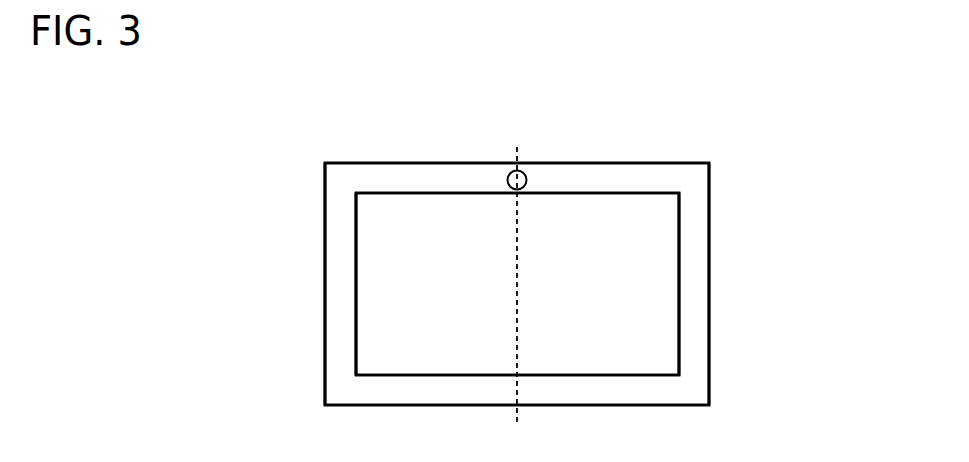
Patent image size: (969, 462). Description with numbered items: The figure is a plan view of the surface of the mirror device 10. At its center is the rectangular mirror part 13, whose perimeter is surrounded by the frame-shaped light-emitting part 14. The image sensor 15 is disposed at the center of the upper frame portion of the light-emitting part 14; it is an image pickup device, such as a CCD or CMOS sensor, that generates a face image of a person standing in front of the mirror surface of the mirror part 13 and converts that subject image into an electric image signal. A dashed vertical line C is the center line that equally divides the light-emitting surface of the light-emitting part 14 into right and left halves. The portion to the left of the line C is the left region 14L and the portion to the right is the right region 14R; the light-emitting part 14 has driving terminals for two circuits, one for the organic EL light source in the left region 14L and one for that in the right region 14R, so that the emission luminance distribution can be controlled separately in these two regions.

The mirror device 10 is at (606, 152).
The mirror part 13 is at (638, 255).
The light-emitting part 14 is at (676, 172).
The left region 14L is at (335, 284).
The right region 14R is at (688, 285).
The image sensor 15 is at (508, 177).
The line C is at (517, 272).